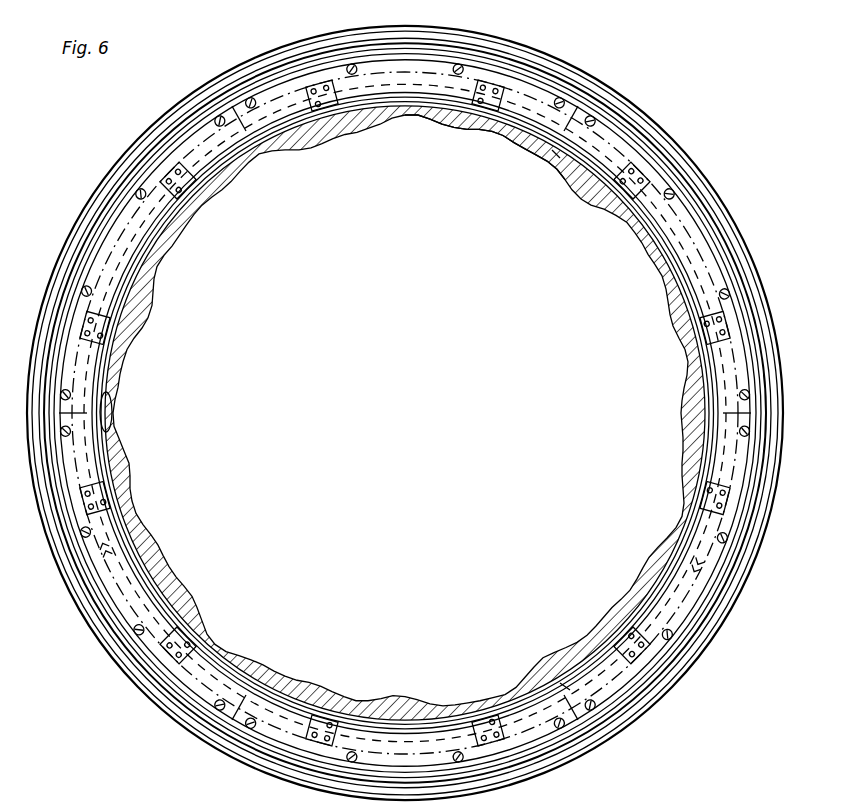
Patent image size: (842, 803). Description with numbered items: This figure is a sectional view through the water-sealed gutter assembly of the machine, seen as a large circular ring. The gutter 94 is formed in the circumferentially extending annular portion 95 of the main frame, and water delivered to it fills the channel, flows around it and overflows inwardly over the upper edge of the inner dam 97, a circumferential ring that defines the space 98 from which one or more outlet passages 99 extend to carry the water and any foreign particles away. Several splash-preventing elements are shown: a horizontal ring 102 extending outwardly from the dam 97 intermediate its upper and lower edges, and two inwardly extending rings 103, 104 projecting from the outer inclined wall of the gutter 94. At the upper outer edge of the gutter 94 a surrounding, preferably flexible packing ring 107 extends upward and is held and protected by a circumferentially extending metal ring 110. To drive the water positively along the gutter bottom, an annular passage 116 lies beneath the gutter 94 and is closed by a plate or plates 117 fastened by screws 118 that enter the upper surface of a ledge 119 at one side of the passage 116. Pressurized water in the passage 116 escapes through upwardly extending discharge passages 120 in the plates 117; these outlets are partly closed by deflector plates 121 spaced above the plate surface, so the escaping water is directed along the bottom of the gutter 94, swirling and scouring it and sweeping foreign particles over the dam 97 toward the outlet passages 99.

The gutter 94 is at (403, 739).
The annular portion of the main frame 95 is at (326, 692).
The inner dam 97 is at (458, 122).
The space 98 is at (480, 130).
The outlet passage 99 is at (557, 152).
The horizontal ring 102 is at (411, 97).
The inwardly extending ring 103 is at (95, 222).
The inwardly extending ring 104 is at (180, 137).
The packing ring 107 is at (132, 162).
The metal ring 110 is at (108, 180).
The annular passage 116 is at (90, 247).
The plate 117 is at (115, 257).
The screw 118 is at (249, 98).
The ledge 119 is at (112, 248).
The discharge passage 120 is at (322, 78).
The deflector plate 121 is at (185, 185).